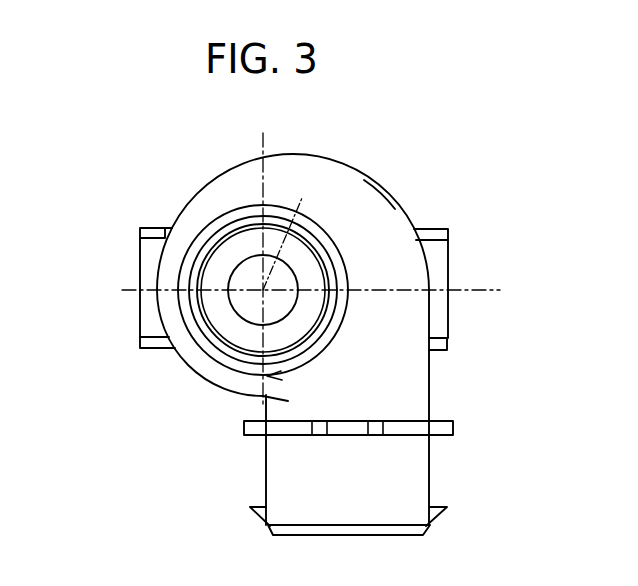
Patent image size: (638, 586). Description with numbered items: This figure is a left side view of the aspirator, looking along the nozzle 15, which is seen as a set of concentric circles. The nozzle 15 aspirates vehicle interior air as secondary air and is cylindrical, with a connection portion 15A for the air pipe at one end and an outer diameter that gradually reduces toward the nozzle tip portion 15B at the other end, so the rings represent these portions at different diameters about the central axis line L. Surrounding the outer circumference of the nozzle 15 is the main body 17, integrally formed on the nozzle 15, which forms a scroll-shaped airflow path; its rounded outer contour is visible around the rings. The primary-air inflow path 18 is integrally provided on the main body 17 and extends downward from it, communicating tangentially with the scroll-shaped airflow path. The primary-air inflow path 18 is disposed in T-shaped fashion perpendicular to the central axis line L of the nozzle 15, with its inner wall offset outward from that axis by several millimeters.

The nozzle 15 is at (235, 247).
The connection portion 15A is at (182, 305).
The nozzle tip portion 15B is at (242, 318).
The main body 17 is at (362, 222).
The primary-air inflow path 18 is at (410, 470).
The central axis line L is at (292, 234).